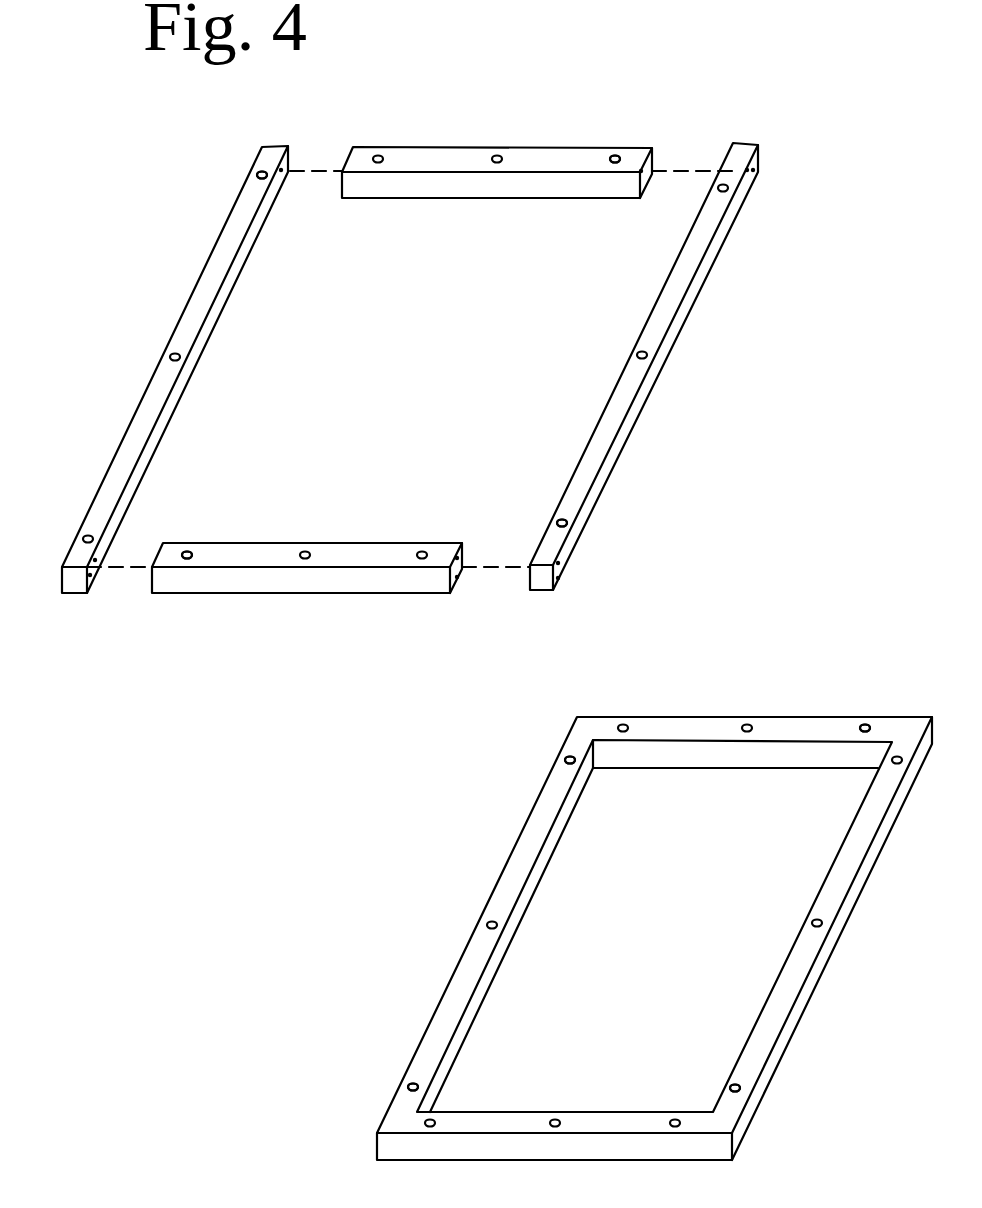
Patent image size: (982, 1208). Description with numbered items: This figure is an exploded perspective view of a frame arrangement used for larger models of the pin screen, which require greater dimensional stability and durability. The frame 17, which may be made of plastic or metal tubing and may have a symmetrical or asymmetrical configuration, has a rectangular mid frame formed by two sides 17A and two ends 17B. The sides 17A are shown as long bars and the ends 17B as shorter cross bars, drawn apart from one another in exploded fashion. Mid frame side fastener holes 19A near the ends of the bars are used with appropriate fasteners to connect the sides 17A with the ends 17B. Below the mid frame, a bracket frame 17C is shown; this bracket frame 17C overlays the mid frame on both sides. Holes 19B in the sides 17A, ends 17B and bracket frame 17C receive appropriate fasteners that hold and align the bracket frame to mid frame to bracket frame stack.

The frame 17 is at (180, 185).
The sides 17A is at (207, 252).
The ends 17B is at (473, 142).
The bracket frame 17C is at (510, 880).
The mid frame side fastener holes 19A is at (762, 170).
The holes 19B is at (187, 550).